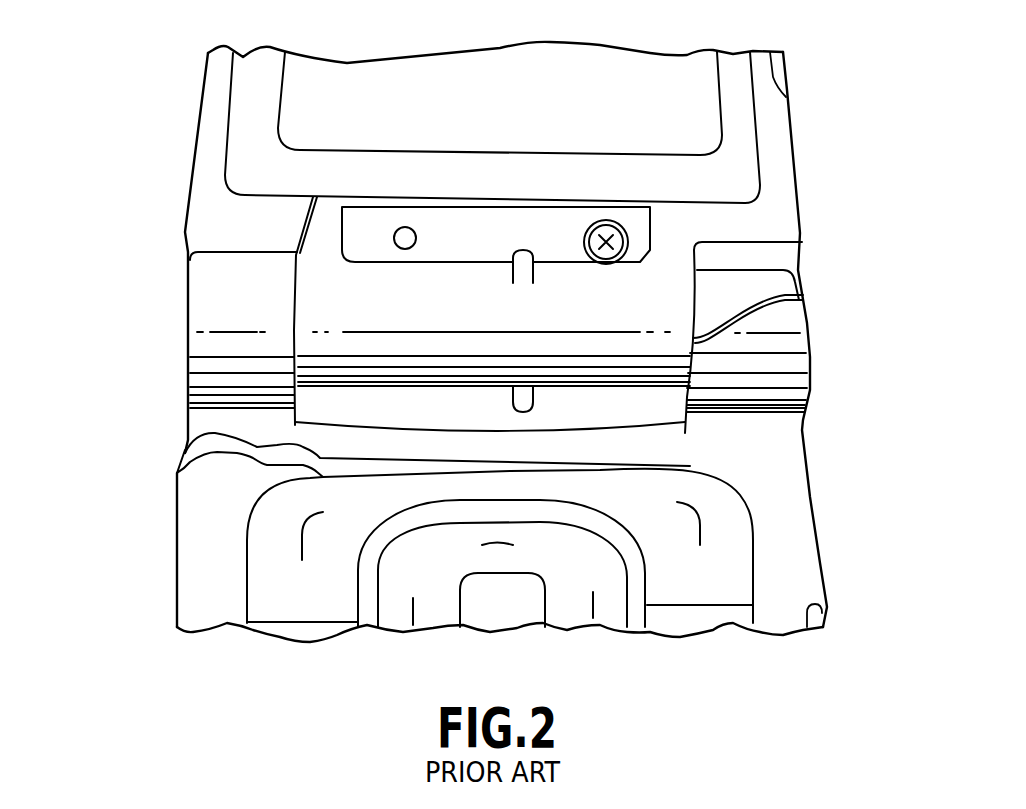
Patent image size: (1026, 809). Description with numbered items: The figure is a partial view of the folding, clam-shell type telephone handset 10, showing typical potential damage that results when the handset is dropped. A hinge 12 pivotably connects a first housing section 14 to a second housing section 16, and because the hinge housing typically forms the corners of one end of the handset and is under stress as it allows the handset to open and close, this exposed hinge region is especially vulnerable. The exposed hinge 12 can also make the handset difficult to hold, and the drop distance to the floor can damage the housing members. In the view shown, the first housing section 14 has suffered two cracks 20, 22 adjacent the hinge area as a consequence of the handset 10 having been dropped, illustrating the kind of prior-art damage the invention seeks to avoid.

The folding telephone handset 10 is at (790, 503).
The hinge 12 is at (313, 325).
The first housing section 14 is at (805, 583).
The second housing section 16 is at (773, 147).
The crack 20 is at (263, 450).
The crack 22 is at (763, 307).